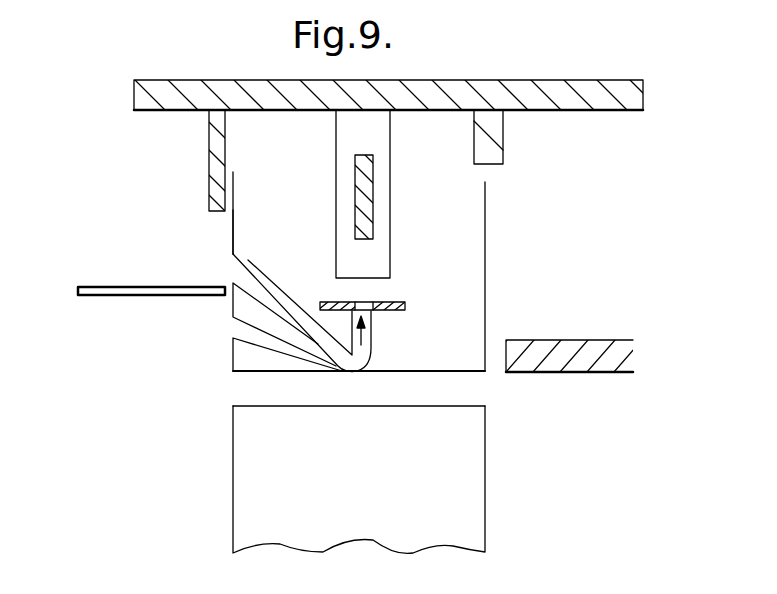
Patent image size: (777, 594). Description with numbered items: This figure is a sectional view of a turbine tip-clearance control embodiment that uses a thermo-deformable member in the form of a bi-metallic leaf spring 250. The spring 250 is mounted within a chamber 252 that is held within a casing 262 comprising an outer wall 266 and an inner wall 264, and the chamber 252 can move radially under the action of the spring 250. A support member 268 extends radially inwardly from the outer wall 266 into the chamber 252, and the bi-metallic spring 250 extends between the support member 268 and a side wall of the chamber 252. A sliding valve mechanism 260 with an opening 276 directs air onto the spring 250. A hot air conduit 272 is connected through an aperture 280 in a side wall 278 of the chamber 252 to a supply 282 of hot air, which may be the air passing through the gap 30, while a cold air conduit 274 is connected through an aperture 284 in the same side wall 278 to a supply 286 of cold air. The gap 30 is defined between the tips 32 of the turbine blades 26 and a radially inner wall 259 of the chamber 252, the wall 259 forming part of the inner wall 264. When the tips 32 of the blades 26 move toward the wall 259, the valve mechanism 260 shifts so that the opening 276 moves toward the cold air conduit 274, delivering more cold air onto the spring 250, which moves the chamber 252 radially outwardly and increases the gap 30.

The turbine blades 26 is at (356, 474).
The gap 30 is at (256, 389).
The tips 32 is at (451, 402).
The bi-metallic leaf spring 250 is at (373, 206).
The chamber 252 is at (476, 248).
The radially inner wall 259 is at (381, 373).
The sliding valve mechanism 260 is at (382, 299).
The casing 262 is at (381, 124).
The inner wall 264 is at (587, 358).
The outer wall 266 is at (428, 80).
The support member 268 is at (372, 138).
The hot air conduit 272 is at (253, 340).
The cold air conduit 274 is at (266, 276).
The opening 276 is at (363, 301).
The side wall 278 is at (233, 193).
The aperture 280 is at (240, 328).
The supply of hot air 282 is at (128, 332).
The aperture 284 is at (242, 275).
The supply of cold air 286 is at (196, 242).